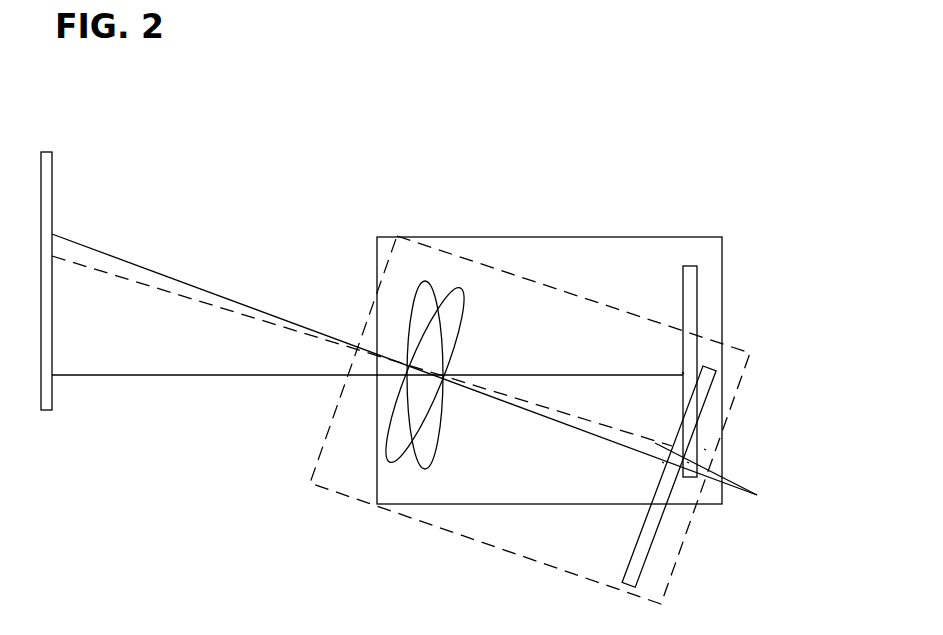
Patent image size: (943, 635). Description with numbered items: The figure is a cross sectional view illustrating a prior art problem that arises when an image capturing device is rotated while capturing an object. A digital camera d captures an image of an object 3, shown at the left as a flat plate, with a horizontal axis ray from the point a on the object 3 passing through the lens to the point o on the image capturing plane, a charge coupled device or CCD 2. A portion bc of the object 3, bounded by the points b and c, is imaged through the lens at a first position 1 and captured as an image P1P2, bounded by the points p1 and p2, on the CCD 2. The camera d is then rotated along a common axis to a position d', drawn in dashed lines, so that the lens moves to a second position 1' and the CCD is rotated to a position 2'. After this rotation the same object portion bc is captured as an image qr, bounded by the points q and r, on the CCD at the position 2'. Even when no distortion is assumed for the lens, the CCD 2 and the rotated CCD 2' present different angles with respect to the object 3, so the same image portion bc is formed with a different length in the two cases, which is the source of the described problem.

The lens at first position 1 is at (391, 364).
The lens at second position 1' is at (456, 375).
The CCD 2 is at (725, 371).
The CCD at rotated position 2' is at (683, 476).
The object 3 is at (53, 170).
The optical axis point on object a is at (352, 376).
The object portion endpoint b is at (347, 346).
The object portion endpoint c is at (389, 359).
The digital camera d is at (549, 342).
The rotated camera position d' is at (530, 392).
The axis point on CCD o is at (682, 372).
The image endpoint on rotated CCD r is at (665, 443).
The image endpoint on rotated CCD q is at (662, 463).
The image endpoint on CCD p1 is at (705, 449).
The image endpoint on CCD p2 is at (688, 462).